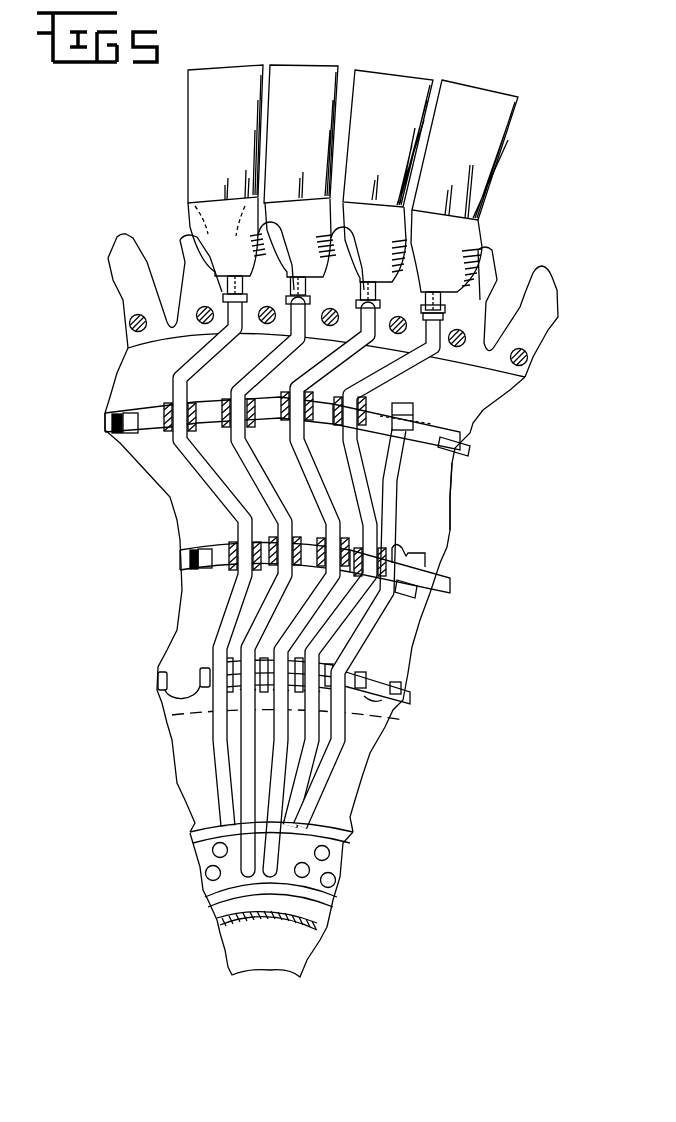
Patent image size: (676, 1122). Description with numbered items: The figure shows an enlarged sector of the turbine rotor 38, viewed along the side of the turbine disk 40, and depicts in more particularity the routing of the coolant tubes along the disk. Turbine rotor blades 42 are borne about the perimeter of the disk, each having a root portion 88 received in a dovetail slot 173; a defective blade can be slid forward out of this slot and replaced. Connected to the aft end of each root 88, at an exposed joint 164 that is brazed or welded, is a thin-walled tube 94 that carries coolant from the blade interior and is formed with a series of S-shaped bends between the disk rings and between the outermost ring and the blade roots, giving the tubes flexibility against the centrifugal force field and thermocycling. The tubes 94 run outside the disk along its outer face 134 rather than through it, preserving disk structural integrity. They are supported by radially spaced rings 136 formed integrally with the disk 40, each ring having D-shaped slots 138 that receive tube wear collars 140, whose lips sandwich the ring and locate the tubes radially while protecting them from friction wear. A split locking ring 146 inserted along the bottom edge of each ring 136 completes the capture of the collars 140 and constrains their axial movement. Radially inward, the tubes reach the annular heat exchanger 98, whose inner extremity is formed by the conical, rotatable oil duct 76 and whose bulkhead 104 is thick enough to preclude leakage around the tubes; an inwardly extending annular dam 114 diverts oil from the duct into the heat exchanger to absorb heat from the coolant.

The turbine rotor blades 42 is at (379, 74).
The root portion 88 is at (474, 238).
The turbine rotor 38 is at (538, 238).
The dovetail slot 173 is at (318, 262).
The joint 164 is at (301, 288).
The tubes 94 is at (189, 364).
The D-shaped slots 138 is at (128, 418).
The tube wear collars 140 is at (428, 420).
The radially spaced rings 136 is at (467, 436).
The split locking ring 146 is at (472, 446).
The outer face 134 is at (438, 488).
The turbine disk 40 is at (458, 515).
The bulkhead 104 is at (333, 867).
The heat exchanger 98 is at (350, 883).
The oil duct 76 is at (318, 927).
The annular dam 114 is at (298, 957).